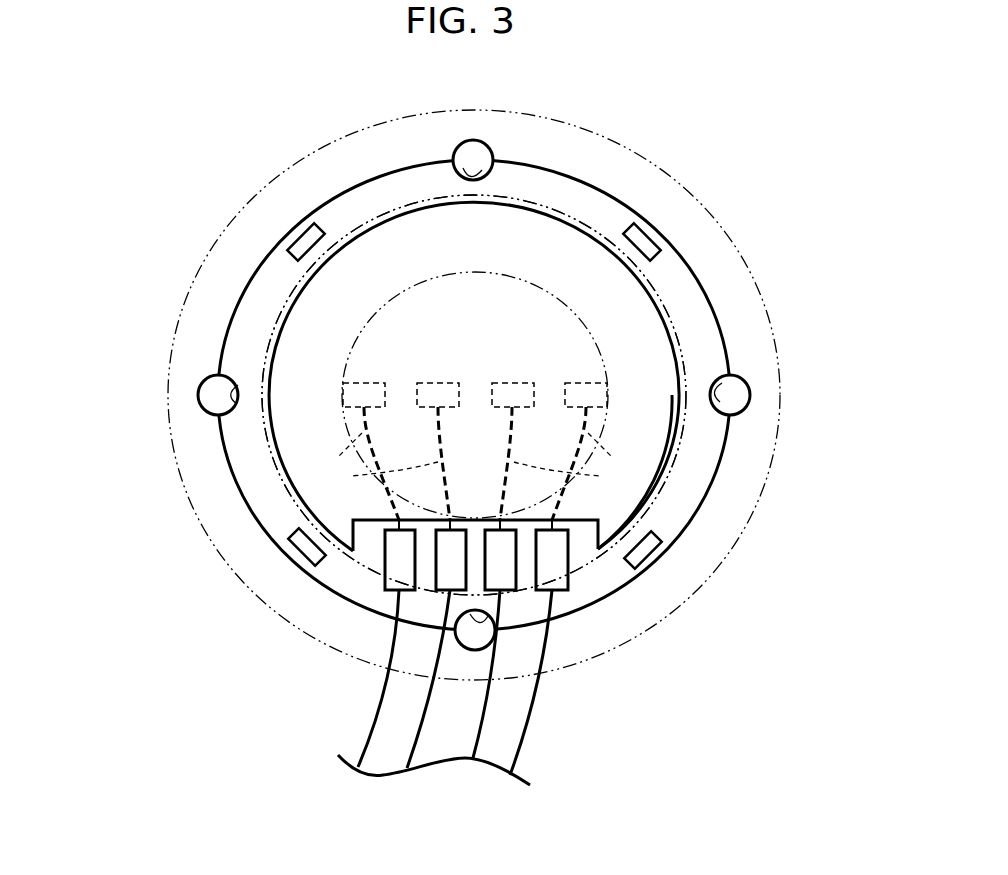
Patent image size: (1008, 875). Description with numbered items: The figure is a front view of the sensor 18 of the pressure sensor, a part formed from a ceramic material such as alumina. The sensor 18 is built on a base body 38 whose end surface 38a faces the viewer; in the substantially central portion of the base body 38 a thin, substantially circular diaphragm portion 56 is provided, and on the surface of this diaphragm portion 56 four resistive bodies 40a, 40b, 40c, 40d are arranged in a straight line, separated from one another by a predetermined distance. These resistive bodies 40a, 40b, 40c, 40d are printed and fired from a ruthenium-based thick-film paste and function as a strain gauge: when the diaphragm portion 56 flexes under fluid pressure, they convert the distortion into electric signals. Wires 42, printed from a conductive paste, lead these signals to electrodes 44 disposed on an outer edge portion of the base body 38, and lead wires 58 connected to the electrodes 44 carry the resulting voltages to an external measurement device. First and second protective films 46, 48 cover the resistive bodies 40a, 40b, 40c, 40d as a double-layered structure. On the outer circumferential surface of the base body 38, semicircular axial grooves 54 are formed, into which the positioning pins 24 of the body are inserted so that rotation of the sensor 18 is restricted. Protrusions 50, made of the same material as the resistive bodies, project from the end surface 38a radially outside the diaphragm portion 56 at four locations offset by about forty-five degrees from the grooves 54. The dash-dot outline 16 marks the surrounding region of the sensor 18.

The detection device 16 is at (163, 300).
The sensor 18 is at (252, 470).
The positioning pins 24 is at (471, 152).
The base body 38 is at (697, 318).
The end surface 38a is at (697, 473).
The resistive body 40a is at (366, 380).
The resistive body 40b is at (439, 380).
The resistive body 40c is at (513, 380).
The resistive body 40d is at (584, 380).
The wires 42 is at (476, 463).
The electrodes 44 is at (398, 567).
The first protective film 46 is at (474, 343).
The second protective film 48 is at (415, 225).
The protrusions 50 is at (305, 242).
The grooves 54 is at (473, 176).
The diaphragm portion 56 is at (508, 271).
The lead wires 58 is at (365, 733).